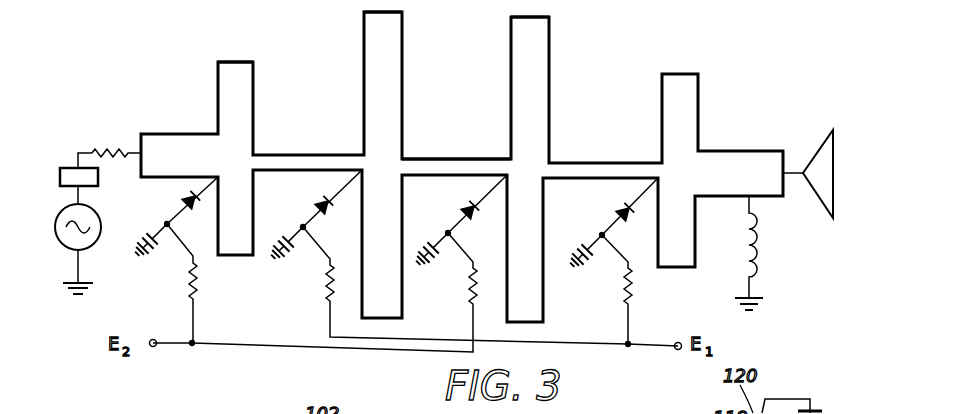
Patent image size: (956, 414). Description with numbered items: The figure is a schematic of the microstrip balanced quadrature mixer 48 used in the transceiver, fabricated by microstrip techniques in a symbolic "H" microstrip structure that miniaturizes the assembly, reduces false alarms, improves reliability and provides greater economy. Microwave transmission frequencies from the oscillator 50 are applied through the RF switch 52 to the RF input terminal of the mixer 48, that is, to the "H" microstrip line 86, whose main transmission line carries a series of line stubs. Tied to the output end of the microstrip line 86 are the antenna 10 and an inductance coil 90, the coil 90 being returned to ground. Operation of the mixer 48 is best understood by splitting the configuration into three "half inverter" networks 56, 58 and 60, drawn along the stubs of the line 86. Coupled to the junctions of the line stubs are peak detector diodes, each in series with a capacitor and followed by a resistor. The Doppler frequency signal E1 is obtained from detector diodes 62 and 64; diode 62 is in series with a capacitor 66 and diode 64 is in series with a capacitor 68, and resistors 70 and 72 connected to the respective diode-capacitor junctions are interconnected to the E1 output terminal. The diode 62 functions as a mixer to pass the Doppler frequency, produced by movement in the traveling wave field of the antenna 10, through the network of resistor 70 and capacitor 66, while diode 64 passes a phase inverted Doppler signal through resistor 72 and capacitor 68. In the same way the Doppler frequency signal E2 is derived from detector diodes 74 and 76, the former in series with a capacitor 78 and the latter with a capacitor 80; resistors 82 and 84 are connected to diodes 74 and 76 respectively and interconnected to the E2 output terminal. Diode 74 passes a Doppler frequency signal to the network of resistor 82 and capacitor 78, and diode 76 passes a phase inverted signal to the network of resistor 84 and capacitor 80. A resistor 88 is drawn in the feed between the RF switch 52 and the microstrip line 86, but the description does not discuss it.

The antenna 10 is at (830, 135).
The mixer 48 is at (312, 76).
The oscillator 50 is at (84, 208).
The RF switch 52 is at (68, 172).
The half inverter network 56 is at (320, 134).
The half inverter network 58 is at (468, 134).
The half inverter network 60 is at (616, 134).
The detector diode 62 is at (620, 204).
The detector diode 64 is at (320, 202).
The capacitor 66 is at (582, 240).
The capacitor 68 is at (283, 237).
The resistor 70 is at (632, 300).
The resistor 72 is at (327, 283).
The detector diode 74 is at (468, 204).
The detector diode 76 is at (185, 197).
The capacitor 78 is at (432, 238).
The capacitor 80 is at (146, 235).
The resistor 82 is at (470, 290).
The resistor 84 is at (199, 281).
The H microstrip line 86 is at (447, 158).
The resistor 88 is at (108, 150).
The inductance coil 90 is at (758, 250).